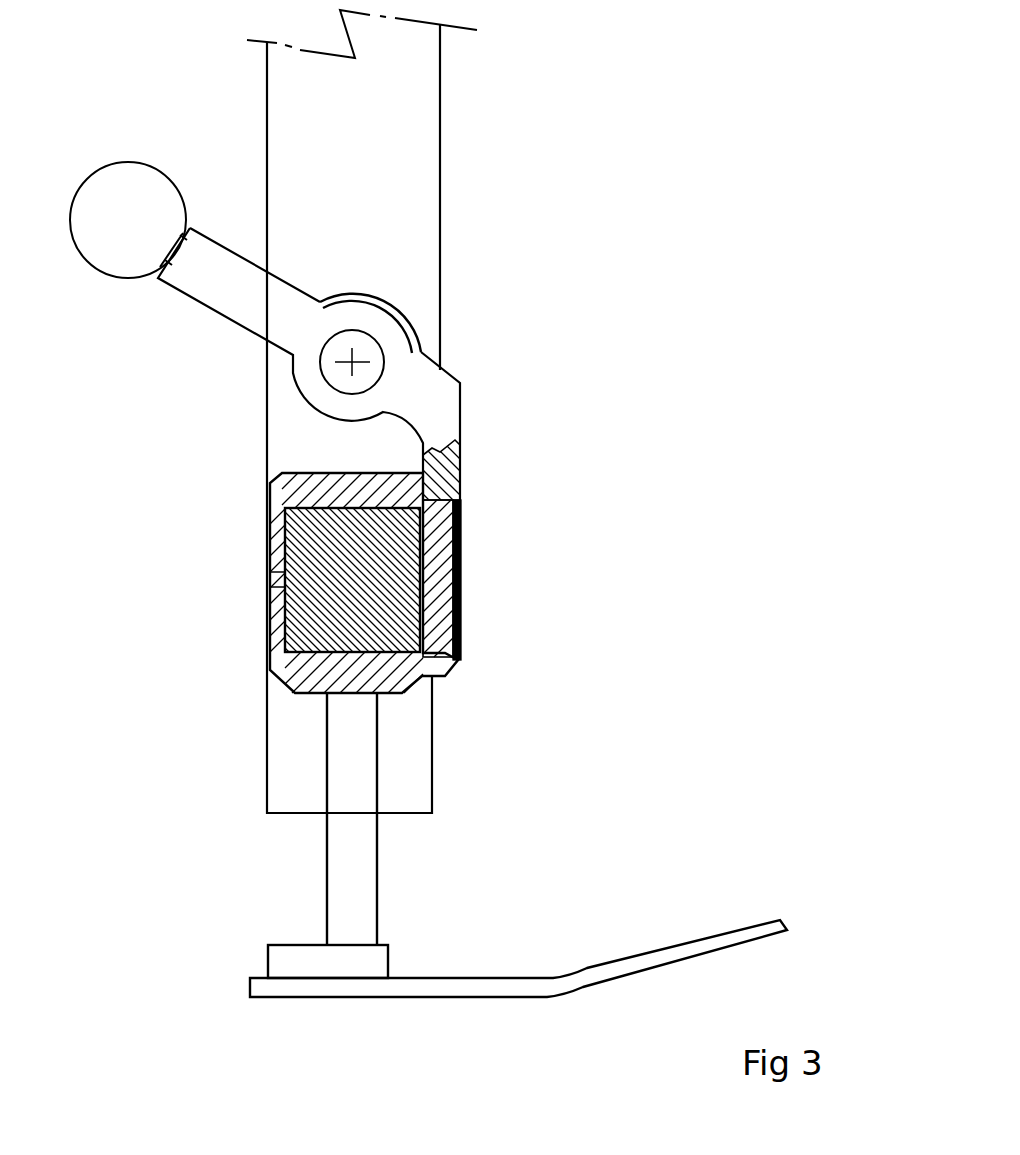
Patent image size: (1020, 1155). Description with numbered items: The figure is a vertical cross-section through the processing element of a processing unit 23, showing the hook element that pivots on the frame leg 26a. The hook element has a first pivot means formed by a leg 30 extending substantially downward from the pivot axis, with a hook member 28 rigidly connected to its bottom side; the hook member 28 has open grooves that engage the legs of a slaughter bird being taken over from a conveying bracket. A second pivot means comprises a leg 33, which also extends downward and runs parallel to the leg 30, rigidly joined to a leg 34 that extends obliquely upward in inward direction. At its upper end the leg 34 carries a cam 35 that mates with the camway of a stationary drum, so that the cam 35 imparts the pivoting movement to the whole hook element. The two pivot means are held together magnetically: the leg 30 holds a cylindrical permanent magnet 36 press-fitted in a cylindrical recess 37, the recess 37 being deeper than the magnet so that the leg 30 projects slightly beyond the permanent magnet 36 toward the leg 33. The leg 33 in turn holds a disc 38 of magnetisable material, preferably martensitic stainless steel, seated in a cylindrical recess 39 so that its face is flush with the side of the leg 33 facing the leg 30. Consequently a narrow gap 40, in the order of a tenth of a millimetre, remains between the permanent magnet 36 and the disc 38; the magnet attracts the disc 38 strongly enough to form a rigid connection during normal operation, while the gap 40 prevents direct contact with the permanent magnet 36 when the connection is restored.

The processing unit 23 is at (603, 243).
The leg 26a is at (412, 172).
The hook member 28 is at (357, 353).
The leg 30 is at (367, 737).
The leg 33 is at (460, 472).
The leg 34 is at (242, 303).
The cam 35 is at (122, 238).
The permanent magnet 36 is at (305, 550).
The cylindrical recess 37 is at (283, 637).
The disc 38 is at (440, 600).
The cylindrical recess 39 is at (455, 637).
The gap 40 is at (440, 560).